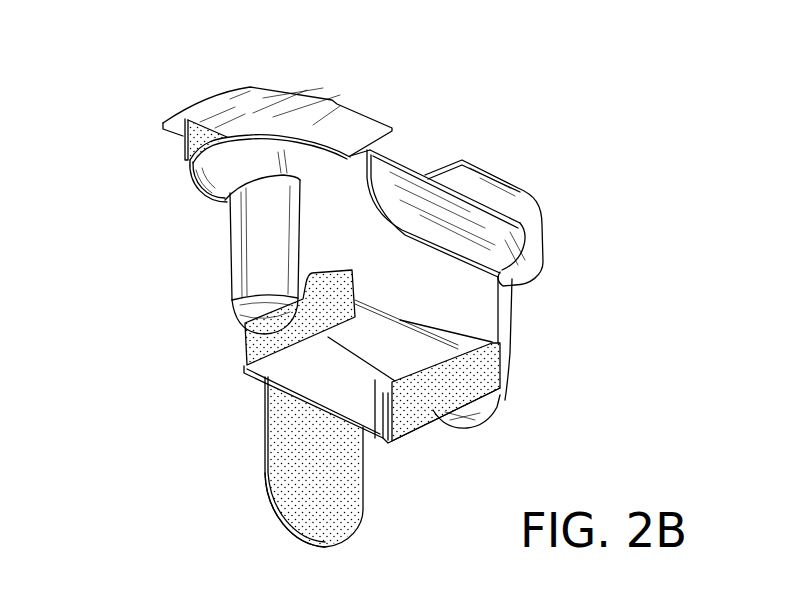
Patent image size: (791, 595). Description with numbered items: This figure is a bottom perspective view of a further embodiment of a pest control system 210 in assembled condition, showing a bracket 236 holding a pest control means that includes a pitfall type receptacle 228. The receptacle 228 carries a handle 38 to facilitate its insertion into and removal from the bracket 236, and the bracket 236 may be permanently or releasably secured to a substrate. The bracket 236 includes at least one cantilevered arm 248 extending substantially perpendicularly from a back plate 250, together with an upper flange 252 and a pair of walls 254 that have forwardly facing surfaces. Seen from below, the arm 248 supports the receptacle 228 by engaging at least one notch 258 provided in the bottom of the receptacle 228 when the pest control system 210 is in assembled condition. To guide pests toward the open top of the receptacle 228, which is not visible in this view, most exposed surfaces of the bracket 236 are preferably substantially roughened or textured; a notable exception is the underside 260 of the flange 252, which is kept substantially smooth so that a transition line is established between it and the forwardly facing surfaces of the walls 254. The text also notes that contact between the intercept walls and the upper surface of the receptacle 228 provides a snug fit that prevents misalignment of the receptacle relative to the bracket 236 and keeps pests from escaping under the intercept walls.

The pest control system 210 is at (193, 60).
The upper flange 252 is at (268, 86).
The walls 254 is at (187, 148).
The pitfall type receptacle 228 is at (179, 182).
The underside of flange 260 is at (260, 120).
The handle 38 is at (502, 250).
The cantilevered arm 248 is at (258, 350).
The notch 258 is at (400, 360).
The bracket 236 is at (253, 433).
The back plate 250 is at (274, 507).